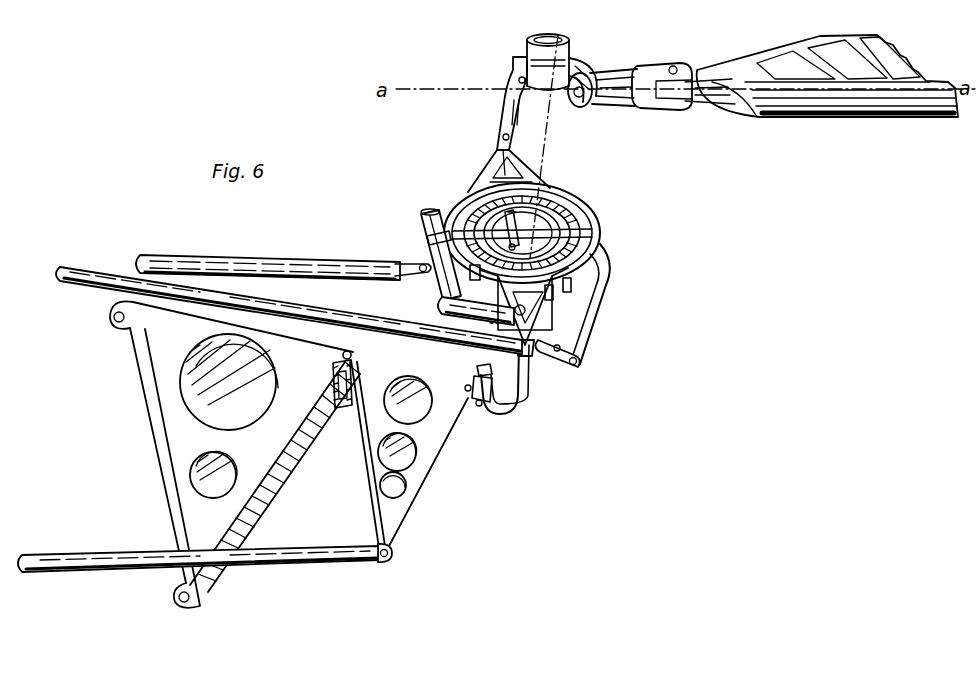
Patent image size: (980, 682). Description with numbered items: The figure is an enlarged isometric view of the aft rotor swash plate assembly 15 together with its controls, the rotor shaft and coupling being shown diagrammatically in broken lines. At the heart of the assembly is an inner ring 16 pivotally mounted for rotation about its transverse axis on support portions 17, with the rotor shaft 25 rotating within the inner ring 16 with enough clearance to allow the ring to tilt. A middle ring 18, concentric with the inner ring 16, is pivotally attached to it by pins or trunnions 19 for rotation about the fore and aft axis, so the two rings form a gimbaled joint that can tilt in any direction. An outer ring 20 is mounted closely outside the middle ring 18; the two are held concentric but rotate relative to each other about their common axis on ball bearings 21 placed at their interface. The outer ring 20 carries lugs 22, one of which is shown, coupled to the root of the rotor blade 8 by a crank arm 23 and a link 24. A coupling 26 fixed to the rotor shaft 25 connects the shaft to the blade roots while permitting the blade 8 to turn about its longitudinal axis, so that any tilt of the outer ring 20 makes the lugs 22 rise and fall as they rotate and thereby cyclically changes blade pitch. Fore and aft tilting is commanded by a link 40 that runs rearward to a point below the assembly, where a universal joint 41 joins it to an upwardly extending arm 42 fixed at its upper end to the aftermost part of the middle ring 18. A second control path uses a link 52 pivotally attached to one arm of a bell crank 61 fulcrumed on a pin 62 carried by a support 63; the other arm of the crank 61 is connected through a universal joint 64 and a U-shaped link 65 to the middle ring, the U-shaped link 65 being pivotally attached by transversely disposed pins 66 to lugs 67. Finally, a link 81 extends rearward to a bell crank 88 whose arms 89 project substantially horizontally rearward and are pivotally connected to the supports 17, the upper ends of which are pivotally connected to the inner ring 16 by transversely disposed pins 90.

The rotor blade 8 is at (875, 118).
The swash plate assembly 15 is at (449, 181).
The inner ring 16 is at (578, 225).
The support portions 17 is at (513, 248).
The middle ring 18 is at (478, 193).
The pins or trunnions 19 is at (590, 248).
The outer ring 20 is at (452, 208).
The ball bearings 21 is at (574, 280).
The lugs 22 is at (493, 153).
The crank arm 23 is at (570, 61).
The link 24 is at (513, 104).
The rotor shaft 25 is at (552, 138).
The coupling 26 is at (570, 100).
The link 40 is at (388, 323).
The universal joint 41 is at (574, 367).
The upwardly extending arm 42 is at (607, 298).
The link 52 is at (277, 555).
The bell crank 61 is at (373, 460).
The pin 62 is at (358, 354).
The support 63 is at (170, 447).
The universal joint 64 is at (478, 410).
The U-shaped link 65 is at (518, 410).
The pins 66 is at (533, 363).
The lugs 67 is at (522, 334).
The link 81 is at (257, 258).
The bell crank 88 is at (421, 225).
The arms 89 is at (463, 314).
The pins 90 is at (531, 279).